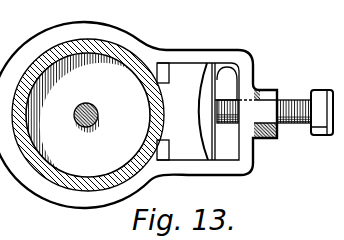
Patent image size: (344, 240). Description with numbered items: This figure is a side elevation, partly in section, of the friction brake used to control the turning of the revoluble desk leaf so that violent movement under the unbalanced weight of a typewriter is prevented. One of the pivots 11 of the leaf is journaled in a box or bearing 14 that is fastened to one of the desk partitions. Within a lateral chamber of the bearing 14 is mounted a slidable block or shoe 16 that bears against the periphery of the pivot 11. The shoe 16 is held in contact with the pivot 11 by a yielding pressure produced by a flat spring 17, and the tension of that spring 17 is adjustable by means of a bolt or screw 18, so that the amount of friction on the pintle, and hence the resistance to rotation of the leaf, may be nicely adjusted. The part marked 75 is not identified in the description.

The pivot 11 is at (100, 43).
The box or bearing 14 is at (137, 47).
The slidable block or shoe 16 is at (183, 80).
The flat spring 17 is at (215, 87).
The spring seat cap 75 is at (227, 73).
The bolt or screw 18 is at (297, 100).